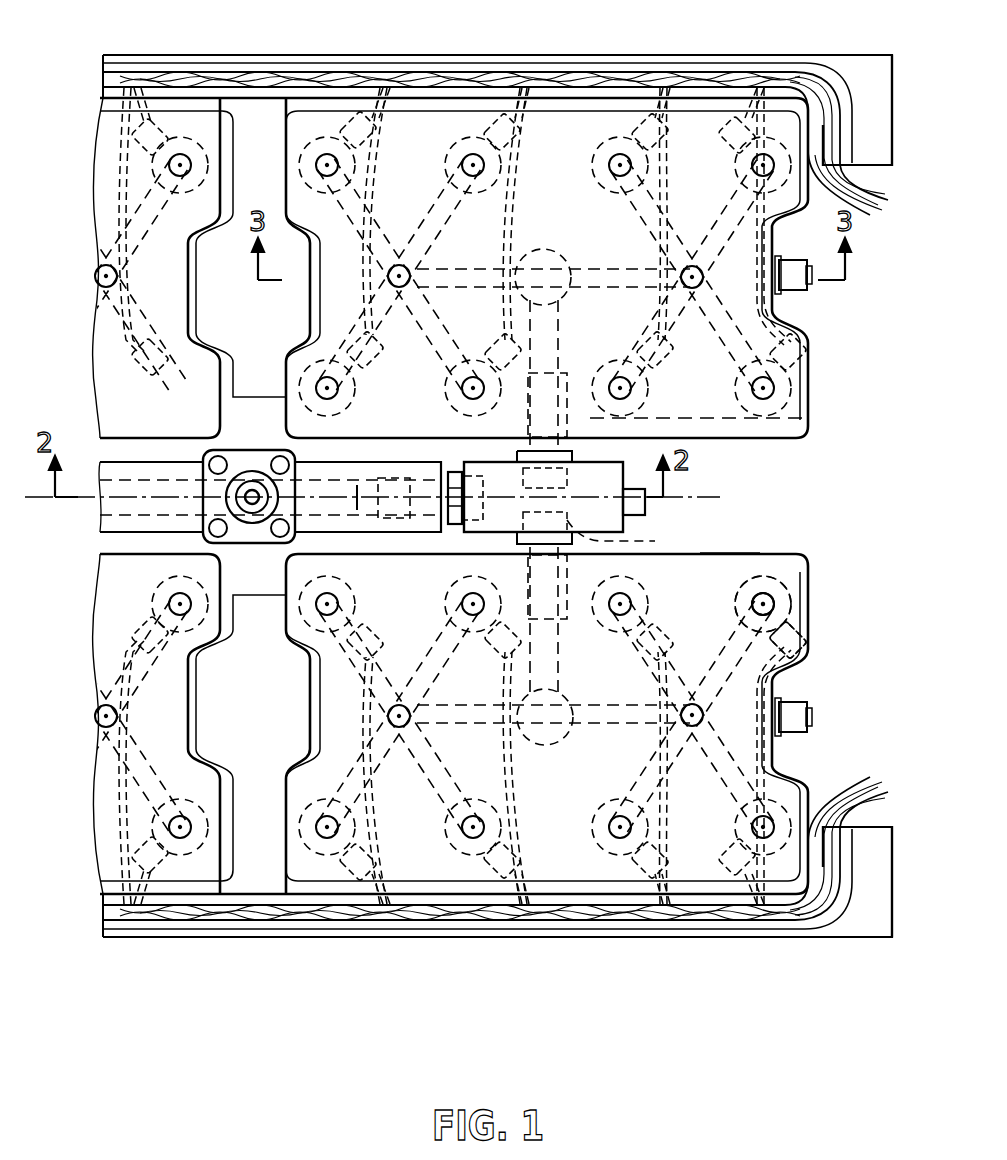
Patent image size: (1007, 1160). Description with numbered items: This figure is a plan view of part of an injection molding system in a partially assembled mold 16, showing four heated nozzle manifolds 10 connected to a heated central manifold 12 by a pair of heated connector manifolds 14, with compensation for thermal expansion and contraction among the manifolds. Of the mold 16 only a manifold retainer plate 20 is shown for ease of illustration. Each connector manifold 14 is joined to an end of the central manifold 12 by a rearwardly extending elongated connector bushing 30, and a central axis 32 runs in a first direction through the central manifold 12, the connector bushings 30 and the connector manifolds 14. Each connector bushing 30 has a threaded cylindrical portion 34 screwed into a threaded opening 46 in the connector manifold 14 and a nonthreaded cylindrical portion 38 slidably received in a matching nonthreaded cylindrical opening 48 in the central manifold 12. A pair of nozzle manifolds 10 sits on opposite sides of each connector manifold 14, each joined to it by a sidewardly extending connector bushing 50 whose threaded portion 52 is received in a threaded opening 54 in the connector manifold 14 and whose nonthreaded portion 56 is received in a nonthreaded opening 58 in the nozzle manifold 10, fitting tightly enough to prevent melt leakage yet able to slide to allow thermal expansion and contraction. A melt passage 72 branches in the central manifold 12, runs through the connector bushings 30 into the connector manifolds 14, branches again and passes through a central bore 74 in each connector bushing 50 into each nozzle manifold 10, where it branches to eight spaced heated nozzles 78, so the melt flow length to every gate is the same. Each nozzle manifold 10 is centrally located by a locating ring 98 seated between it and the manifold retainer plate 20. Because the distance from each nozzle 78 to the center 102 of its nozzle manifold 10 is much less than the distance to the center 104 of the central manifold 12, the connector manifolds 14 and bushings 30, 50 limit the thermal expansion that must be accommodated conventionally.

The heated nozzle manifold 10 is at (120, 374).
The heated central manifold 12 is at (118, 520).
The heated connector manifold 14 is at (627, 515).
The mold 16 is at (860, 923).
The manifold retainer plate 20 is at (117, 931).
The connector bushing 30 is at (453, 472).
The central axis 32 is at (725, 498).
The threaded cylindrical portion 34 is at (483, 490).
The nonthreaded cylindrical portion 38 is at (412, 477).
The threaded opening 46 is at (470, 472).
The nonthreaded cylindrical opening 48 is at (357, 495).
The connector bushing 50 is at (600, 452).
The threaded portion 52 is at (627, 537).
The threaded opening 54 is at (715, 549).
The nonthreaded portion 56 is at (777, 597).
The nonthreaded opening 58 is at (778, 628).
The melt passage 72 is at (140, 783).
The central bore 74 is at (805, 418).
The heated nozzle 78 is at (155, 603).
The locating ring 98 is at (546, 250).
The center of the nozzle manifold 102 is at (590, 262).
The center of the central manifold 104 is at (250, 495).